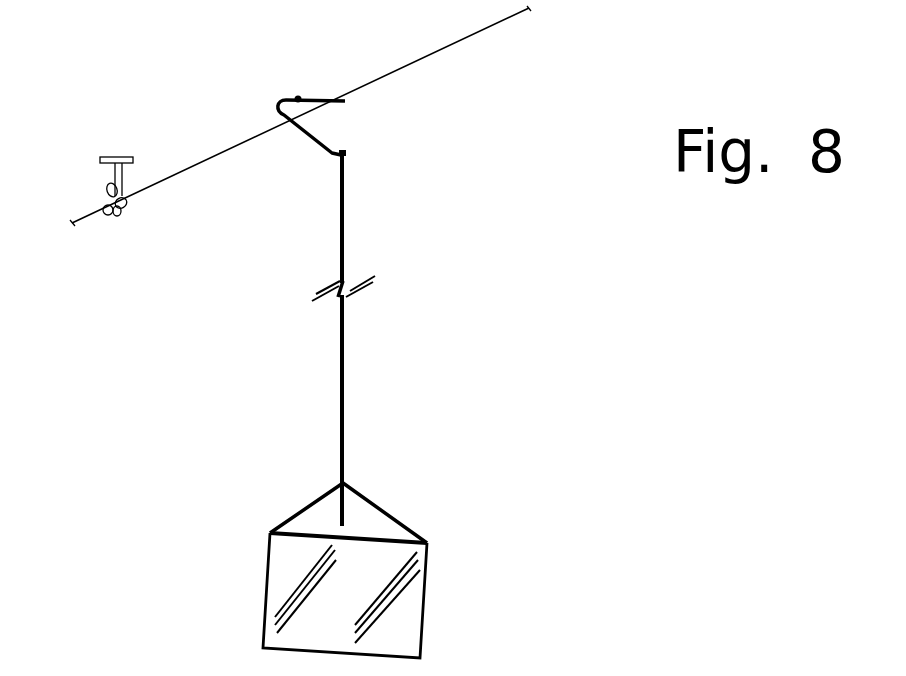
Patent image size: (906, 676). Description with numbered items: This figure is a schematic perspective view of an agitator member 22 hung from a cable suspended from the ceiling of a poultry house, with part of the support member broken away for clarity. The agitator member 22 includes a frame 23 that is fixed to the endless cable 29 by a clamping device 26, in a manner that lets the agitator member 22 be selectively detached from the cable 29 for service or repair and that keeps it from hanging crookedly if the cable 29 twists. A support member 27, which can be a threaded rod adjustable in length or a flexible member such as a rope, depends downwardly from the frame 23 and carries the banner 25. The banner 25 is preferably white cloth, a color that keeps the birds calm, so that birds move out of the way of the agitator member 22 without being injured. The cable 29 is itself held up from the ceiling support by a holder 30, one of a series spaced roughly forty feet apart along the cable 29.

The agitator member 22 is at (398, 220).
The frame 23 is at (280, 113).
The banner 25 is at (423, 560).
The clamping device 26 is at (323, 99).
The support member 27 is at (342, 262).
The endless cable 29 is at (488, 32).
The holder 30 is at (128, 157).